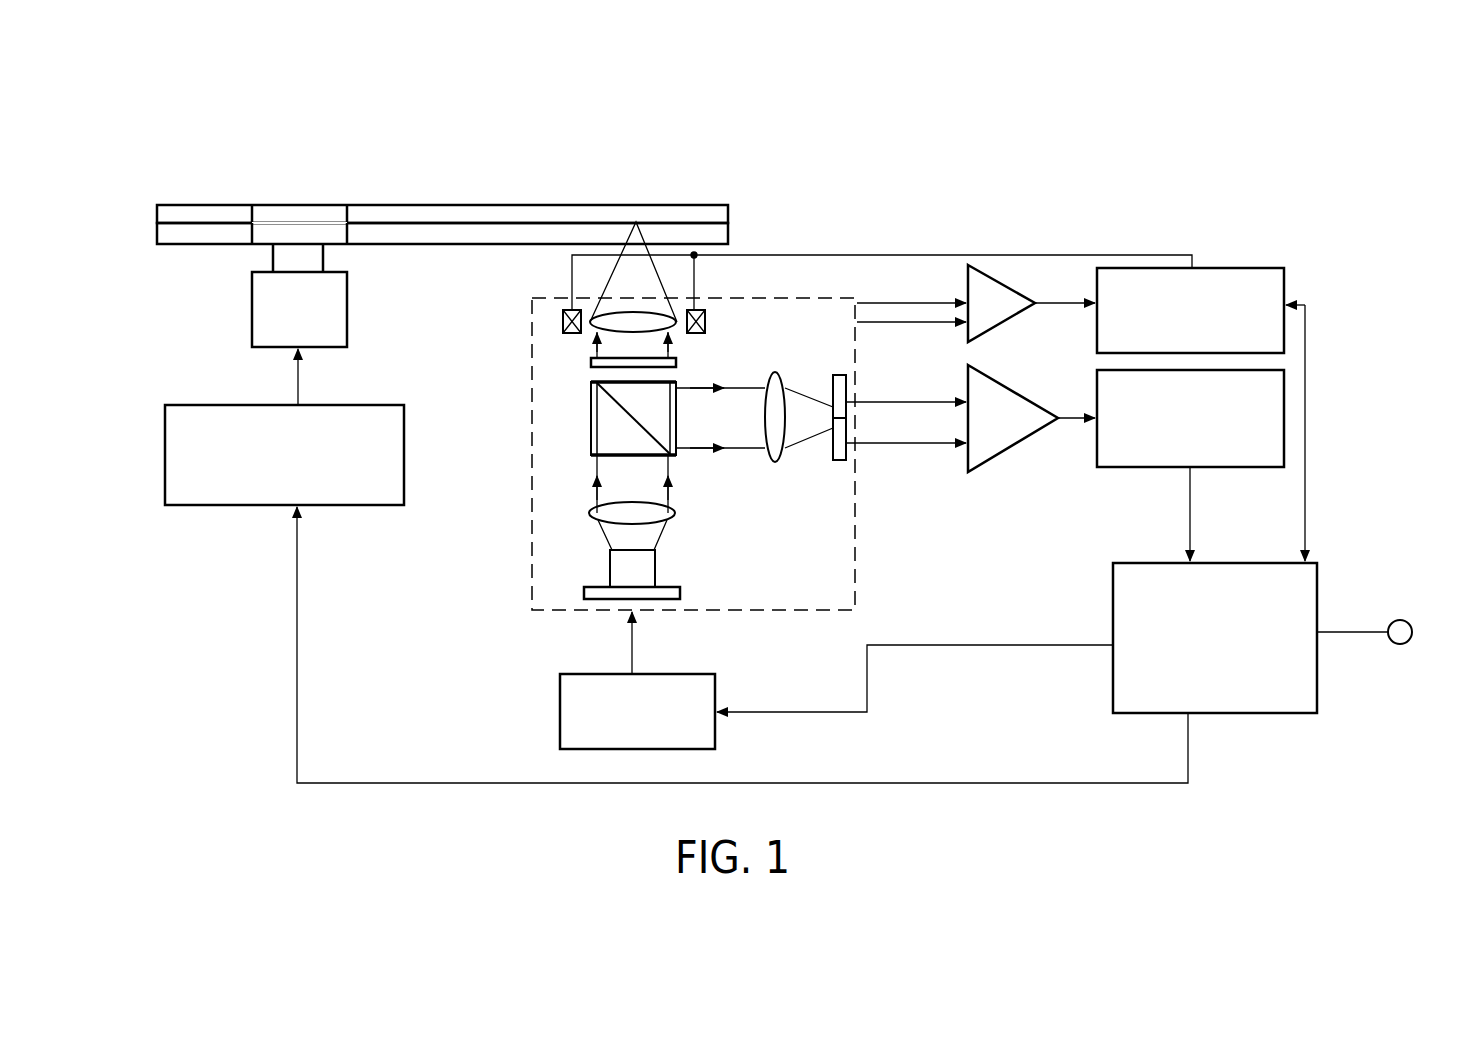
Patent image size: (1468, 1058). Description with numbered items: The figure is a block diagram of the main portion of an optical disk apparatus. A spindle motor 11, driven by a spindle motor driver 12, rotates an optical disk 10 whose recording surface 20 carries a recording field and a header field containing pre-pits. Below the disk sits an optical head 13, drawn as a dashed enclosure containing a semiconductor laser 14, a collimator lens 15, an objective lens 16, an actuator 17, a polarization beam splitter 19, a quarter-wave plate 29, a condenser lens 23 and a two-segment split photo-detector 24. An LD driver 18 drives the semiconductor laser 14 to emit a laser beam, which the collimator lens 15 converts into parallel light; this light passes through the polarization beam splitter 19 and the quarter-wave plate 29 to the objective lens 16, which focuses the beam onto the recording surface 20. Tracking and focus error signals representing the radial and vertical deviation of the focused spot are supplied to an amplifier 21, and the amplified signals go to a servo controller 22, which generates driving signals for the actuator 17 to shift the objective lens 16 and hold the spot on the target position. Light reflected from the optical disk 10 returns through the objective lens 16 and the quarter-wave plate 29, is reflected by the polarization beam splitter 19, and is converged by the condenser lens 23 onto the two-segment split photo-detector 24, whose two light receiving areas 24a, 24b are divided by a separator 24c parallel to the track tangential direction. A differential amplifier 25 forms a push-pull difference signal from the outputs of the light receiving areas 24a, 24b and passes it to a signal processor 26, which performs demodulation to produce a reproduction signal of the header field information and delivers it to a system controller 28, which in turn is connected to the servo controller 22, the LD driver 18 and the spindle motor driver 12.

The optical disk 10 is at (675, 205).
The recording surface 20 is at (728, 222).
The spindle motor 11 is at (347, 310).
The spindle motor driver 12 is at (404, 455).
The optical head 13 is at (530, 562).
The semiconductor laser 14 is at (655, 570).
The collimator lens 15 is at (675, 517).
The objective lens 16 is at (675, 328).
The actuator 17 is at (705, 322).
The LD driver 18 is at (560, 710).
The polarization beam splitter 19 is at (591, 408).
The amplifier 21 is at (1012, 296).
The servo controller 22 is at (1228, 268).
The condenser lens 23 is at (777, 435).
The two-segment split photo-detector 24 is at (841, 475).
The light receiving area 24a is at (838, 386).
The light receiving area 24b is at (846, 456).
The separator 24c is at (846, 418).
The differential amplifier 25 is at (1028, 440).
The signal processor 26 is at (1148, 467).
The system controller 28 is at (1245, 713).
The λ/4 plate 29 is at (591, 362).